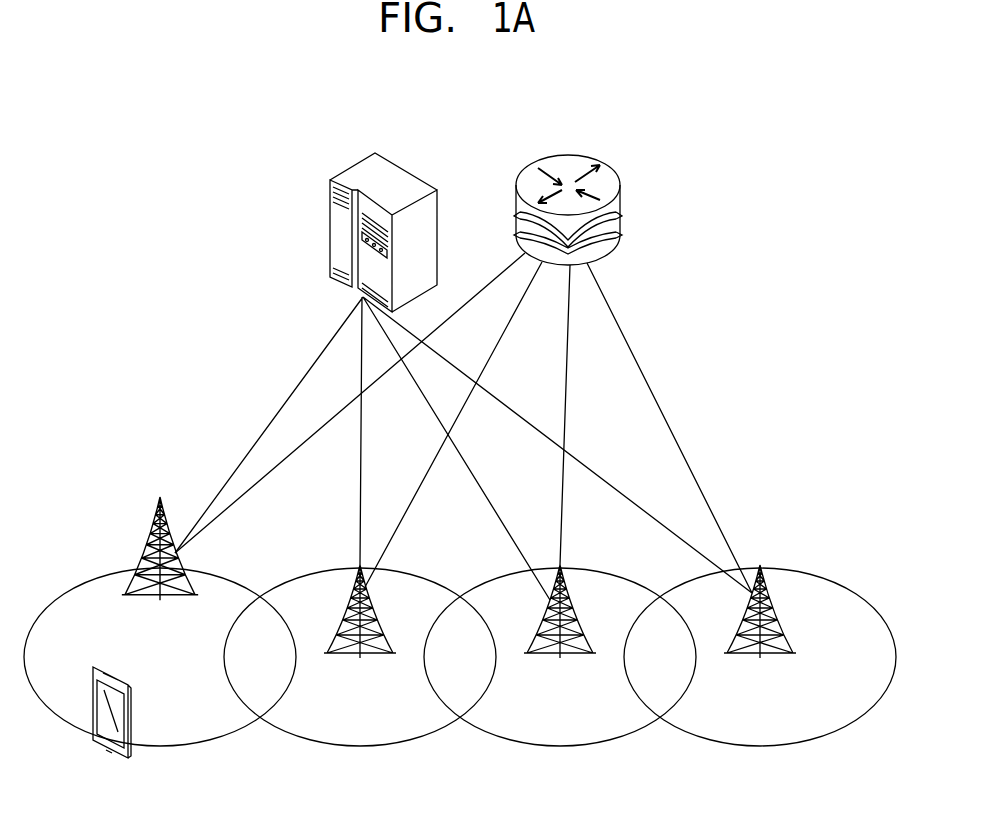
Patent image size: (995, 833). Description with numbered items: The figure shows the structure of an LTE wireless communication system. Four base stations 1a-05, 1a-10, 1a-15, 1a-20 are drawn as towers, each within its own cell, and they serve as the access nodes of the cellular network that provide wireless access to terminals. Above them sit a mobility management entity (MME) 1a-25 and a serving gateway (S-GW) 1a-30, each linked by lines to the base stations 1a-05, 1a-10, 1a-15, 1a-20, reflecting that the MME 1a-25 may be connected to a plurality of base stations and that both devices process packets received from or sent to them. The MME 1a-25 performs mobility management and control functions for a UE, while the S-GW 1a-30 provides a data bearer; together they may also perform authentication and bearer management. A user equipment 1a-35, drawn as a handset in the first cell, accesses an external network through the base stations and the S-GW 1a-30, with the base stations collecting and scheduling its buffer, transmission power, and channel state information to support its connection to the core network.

The base station 1a-05 is at (160, 495).
The base station 1a-10 is at (358, 550).
The base station 1a-15 is at (562, 552).
The base station 1a-20 is at (760, 553).
The mobility management entity (MME) 1a-25 is at (355, 167).
The serving gateway (S-GW) 1a-30 is at (552, 158).
The user equipment (UE) 1a-35 is at (93, 695).